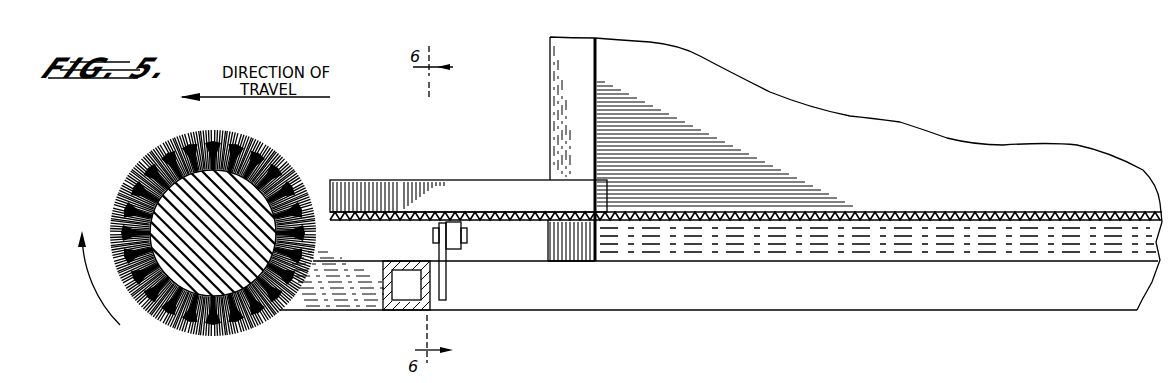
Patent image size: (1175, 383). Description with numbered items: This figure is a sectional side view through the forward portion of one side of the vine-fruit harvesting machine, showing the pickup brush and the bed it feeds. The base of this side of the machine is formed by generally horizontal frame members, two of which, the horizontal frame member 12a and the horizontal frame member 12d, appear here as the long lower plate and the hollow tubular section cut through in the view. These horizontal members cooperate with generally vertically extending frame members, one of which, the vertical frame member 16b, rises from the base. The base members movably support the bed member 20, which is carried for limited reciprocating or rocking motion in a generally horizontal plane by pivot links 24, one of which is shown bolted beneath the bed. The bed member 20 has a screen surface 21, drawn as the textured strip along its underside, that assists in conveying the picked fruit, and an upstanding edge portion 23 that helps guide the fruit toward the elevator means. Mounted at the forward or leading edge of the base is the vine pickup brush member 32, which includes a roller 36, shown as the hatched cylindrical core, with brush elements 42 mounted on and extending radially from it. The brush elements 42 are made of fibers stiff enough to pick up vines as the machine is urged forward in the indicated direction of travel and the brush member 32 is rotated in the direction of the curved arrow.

The horizontal frame member 12a is at (655, 311).
The horizontal frame member 12d is at (383, 304).
The vertically extending frame member 16b is at (553, 88).
The bed member 20 is at (692, 206).
The screen surface 21 is at (809, 212).
The upstanding edge portion 23 is at (470, 181).
The pivot link 24 is at (438, 248).
The vine pickup brush member 32 is at (182, 230).
The roller 36 is at (226, 246).
The brush elements 42 is at (282, 165).